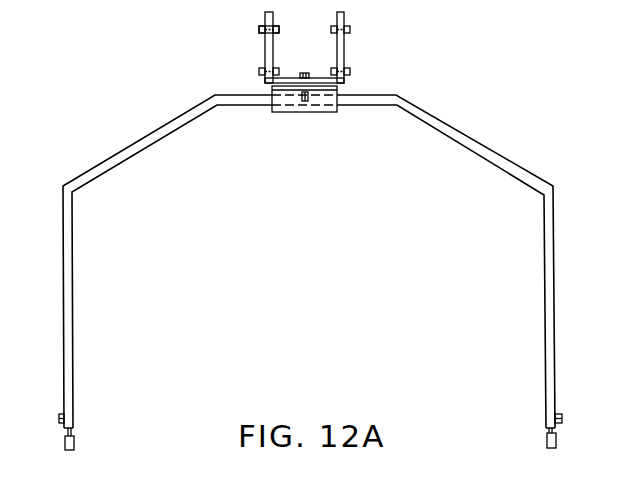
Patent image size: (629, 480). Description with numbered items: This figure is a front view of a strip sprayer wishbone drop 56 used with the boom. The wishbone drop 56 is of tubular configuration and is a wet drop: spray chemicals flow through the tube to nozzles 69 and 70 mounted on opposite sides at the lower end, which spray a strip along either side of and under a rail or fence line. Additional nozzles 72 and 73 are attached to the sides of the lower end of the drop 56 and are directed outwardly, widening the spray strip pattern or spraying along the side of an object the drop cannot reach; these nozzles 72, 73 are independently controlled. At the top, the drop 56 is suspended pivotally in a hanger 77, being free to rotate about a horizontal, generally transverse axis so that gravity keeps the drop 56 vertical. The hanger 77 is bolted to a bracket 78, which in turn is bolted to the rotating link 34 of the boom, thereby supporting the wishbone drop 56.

The rotating link 34 is at (265, 50).
The bracket 78 is at (274, 46).
The hanger 77 is at (305, 112).
The wishbone drop 56 is at (74, 260).
The nozzle 72 is at (59, 418).
The nozzle 73 is at (562, 419).
The nozzle 69 is at (74, 441).
The nozzle 70 is at (547, 440).